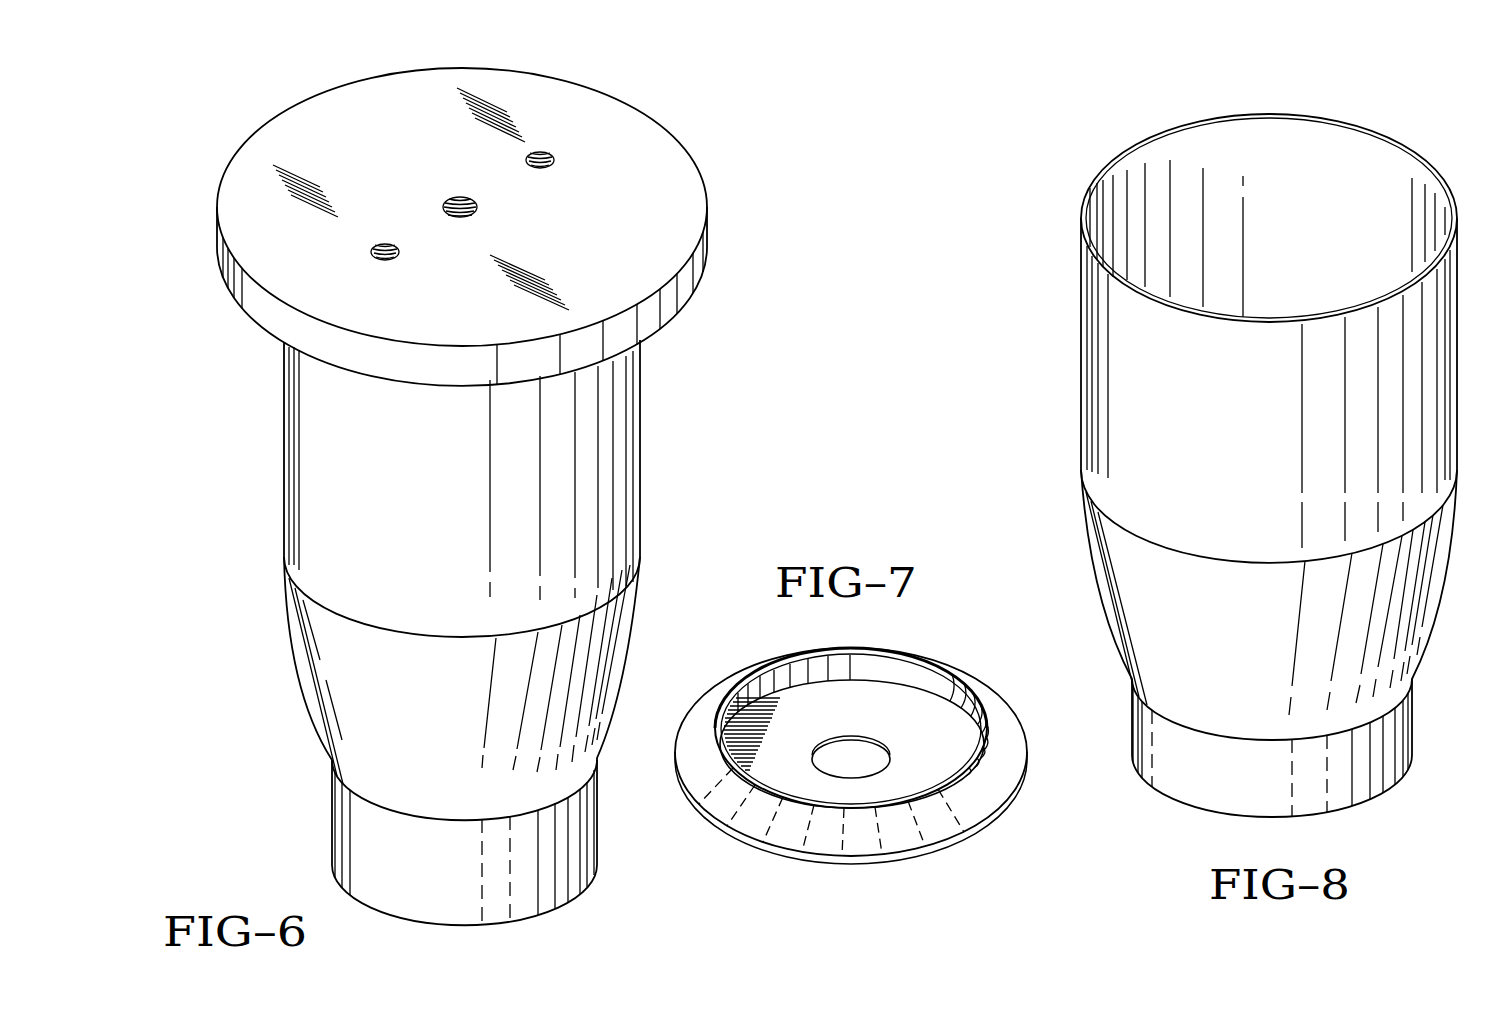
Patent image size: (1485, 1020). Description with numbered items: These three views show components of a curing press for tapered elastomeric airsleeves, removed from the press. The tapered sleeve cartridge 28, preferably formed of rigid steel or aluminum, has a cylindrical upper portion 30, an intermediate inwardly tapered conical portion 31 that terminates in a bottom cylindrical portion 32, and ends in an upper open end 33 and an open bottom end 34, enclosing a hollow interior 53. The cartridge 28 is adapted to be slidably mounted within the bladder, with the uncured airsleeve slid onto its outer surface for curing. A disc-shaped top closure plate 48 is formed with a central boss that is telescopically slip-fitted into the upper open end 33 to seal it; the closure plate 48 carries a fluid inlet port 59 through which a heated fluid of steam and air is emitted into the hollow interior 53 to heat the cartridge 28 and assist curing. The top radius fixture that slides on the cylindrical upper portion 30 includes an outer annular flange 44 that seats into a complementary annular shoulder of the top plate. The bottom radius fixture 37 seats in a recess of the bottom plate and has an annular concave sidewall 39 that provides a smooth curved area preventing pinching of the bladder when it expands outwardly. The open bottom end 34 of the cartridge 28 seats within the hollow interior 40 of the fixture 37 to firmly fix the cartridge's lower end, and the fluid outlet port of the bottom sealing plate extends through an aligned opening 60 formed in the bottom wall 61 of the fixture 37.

In FIG. 6, the tapered sleeve cartridge 28 is at (292, 627).
In FIG. 8, the tapered sleeve cartridge 28 is at (1073, 386).
In FIG. 6, the cylindrical upper portion 30 is at (327, 464).
In FIG. 8, the cylindrical upper portion 30 is at (1125, 335).
In FIG. 6, the intermediate inwardly tapered conical portion 31 is at (459, 674).
In FIG. 8, the intermediate inwardly tapered conical portion 31 is at (1137, 575).
In FIG. 6, the bottom cylindrical portion 32 is at (360, 823).
In FIG. 8, the bottom cylindrical portion 32 is at (1184, 768).
In FIG. 8, the upper open end 33 is at (1176, 163).
In FIG. 8, the open bottom end 34 is at (1379, 790).
In FIG. 7, the bottom radius fixture 37 is at (886, 870).
In FIG. 7, the annular concave sidewall 39 is at (960, 805).
In FIG. 7, the hollow interior 40 is at (736, 758).
In FIG. 6, the outer annular flange 44 is at (247, 288).
In FIG. 6, the top closure plate 48 is at (645, 148).
In FIG. 8, the hollow interior 53 is at (1293, 185).
In FIG. 6, the fluid inlet port 59 is at (468, 208).
In FIG. 7, the aligned opening 60 is at (838, 737).
In FIG. 7, the bottom wall 61 is at (918, 717).